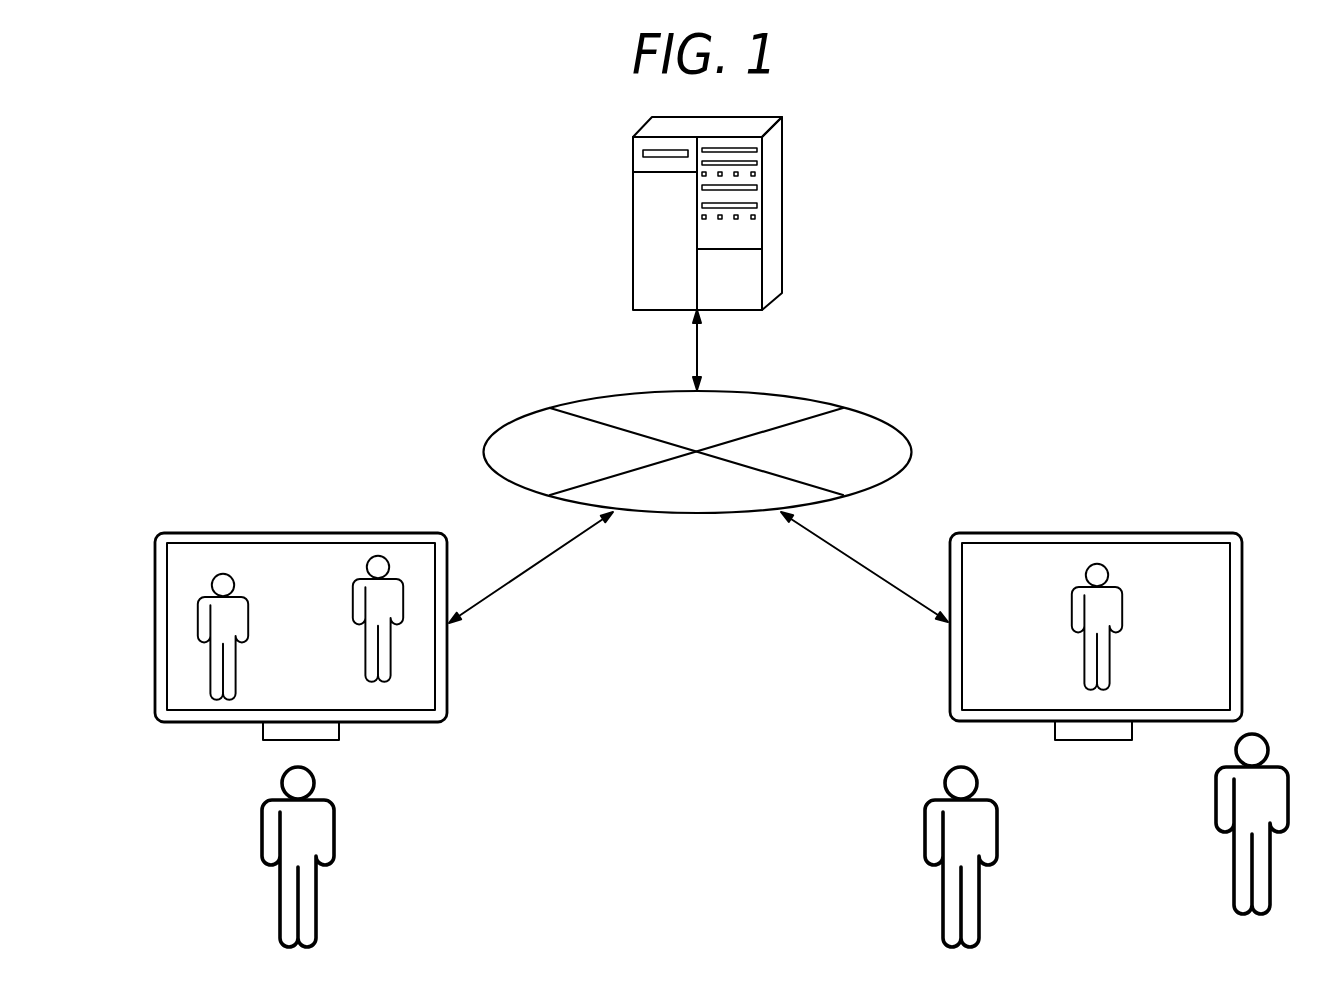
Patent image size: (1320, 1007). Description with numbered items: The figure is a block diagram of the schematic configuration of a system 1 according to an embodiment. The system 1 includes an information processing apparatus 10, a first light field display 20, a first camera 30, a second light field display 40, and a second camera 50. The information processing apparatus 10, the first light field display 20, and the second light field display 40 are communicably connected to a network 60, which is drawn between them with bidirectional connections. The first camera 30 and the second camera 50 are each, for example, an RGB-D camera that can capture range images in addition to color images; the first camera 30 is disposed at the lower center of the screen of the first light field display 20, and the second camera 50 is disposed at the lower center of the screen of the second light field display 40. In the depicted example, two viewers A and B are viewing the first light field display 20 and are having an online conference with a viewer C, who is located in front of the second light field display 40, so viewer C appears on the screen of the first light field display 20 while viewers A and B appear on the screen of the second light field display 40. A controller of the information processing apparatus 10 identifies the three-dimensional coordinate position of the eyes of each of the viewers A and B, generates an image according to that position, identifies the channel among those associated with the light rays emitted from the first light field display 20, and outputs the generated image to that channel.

The system 1 is at (1015, 221).
The information processing apparatus 10 is at (633, 150).
The first light field display 20 is at (1168, 533).
The first camera 30 is at (1050, 728).
The second light field display 40 is at (297, 533).
The second camera 50 is at (258, 728).
The network 60 is at (890, 424).
The viewer A is at (199, 619).
The viewer B is at (391, 638).
The viewer C is at (1072, 602).